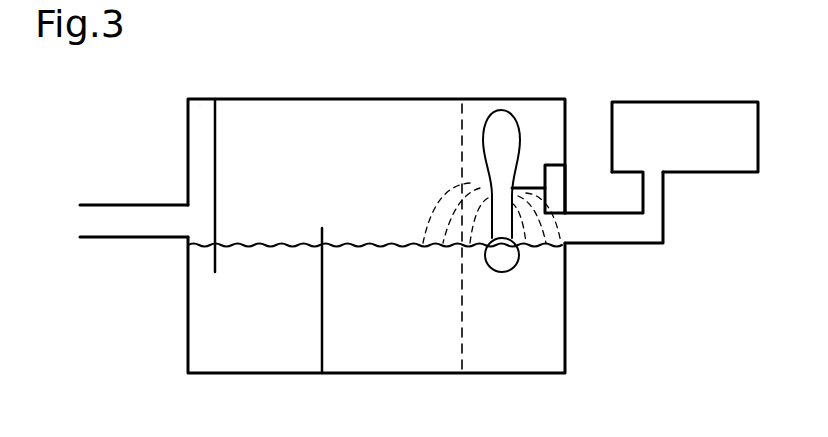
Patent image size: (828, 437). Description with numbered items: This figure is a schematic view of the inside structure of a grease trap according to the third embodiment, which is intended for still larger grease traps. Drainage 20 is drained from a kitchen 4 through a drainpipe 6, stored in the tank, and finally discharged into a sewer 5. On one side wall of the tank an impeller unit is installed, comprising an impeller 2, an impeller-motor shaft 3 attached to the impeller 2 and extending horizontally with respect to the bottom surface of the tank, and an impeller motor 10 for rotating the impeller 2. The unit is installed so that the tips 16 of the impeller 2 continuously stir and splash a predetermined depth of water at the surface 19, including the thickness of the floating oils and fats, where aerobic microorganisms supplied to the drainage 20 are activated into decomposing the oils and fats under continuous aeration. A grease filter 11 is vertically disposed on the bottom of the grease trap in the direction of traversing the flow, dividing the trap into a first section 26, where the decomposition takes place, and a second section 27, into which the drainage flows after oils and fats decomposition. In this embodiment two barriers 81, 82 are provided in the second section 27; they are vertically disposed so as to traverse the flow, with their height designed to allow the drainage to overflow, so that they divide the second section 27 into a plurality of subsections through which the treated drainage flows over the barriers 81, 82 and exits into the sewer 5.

The impeller 2 is at (498, 115).
The impeller-motor shaft 3 is at (531, 187).
The kitchen 4 is at (677, 102).
The sewer 5 is at (121, 209).
The drainpipe 6 is at (655, 228).
The impeller motor 10 is at (558, 181).
The grease filter 11 is at (462, 338).
The tips 16 is at (507, 270).
The surface 19 is at (250, 247).
The drainage 20 is at (552, 352).
The first section 26 is at (542, 110).
The second section 27 is at (417, 122).
The barrier 81 is at (322, 281).
The barrier 82 is at (215, 141).